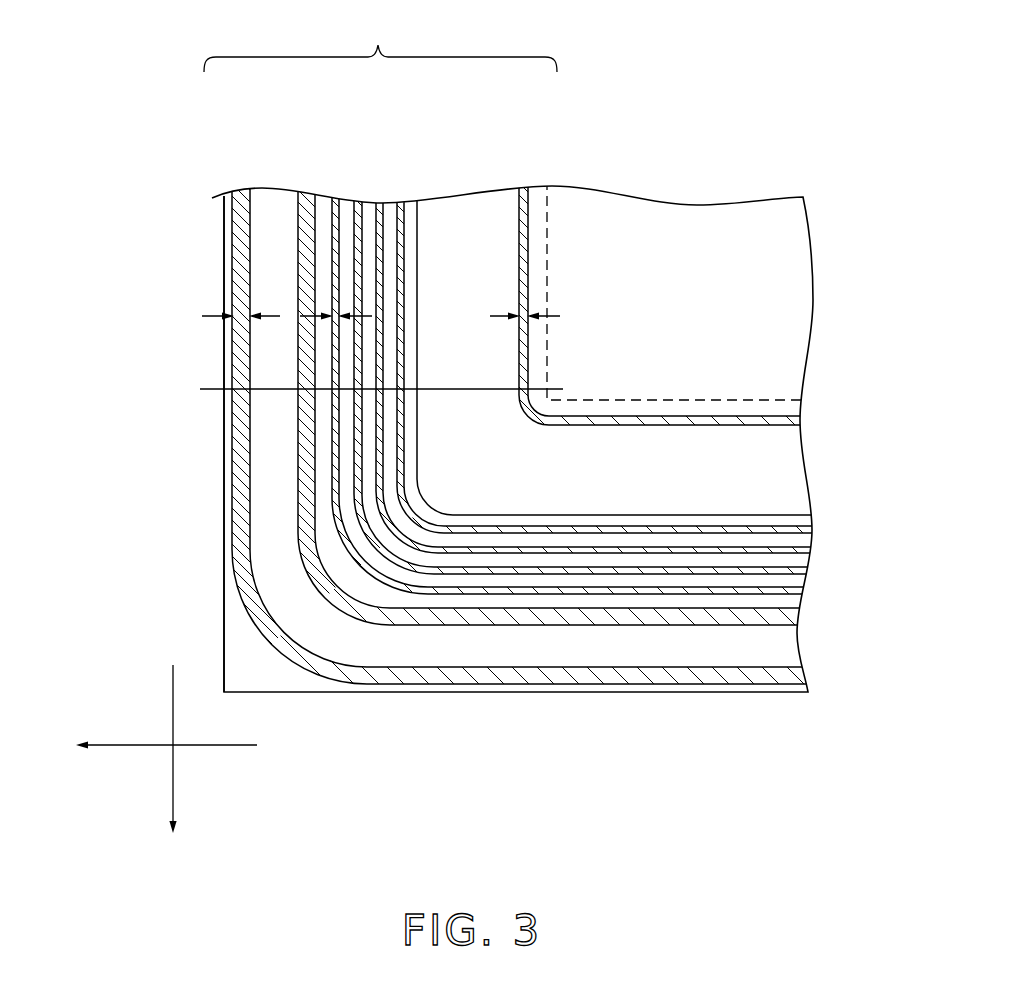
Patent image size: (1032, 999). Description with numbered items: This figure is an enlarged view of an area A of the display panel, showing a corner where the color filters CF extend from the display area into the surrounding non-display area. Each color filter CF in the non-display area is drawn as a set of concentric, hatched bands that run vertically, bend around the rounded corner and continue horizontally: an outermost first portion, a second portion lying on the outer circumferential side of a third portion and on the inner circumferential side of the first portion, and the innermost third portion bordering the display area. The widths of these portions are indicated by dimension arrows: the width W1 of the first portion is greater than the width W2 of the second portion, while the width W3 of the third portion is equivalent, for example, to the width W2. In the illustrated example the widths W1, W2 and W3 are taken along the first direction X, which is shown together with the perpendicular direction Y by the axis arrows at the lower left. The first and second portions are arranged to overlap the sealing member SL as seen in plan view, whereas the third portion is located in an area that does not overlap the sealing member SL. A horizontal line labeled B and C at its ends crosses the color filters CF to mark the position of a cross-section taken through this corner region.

The area A is at (702, 161).
The sealing member SL is at (221, 439).
The color filters CF is at (380, 44).
The width of the first portion W1 is at (237, 315).
The width of the second portion W2 is at (338, 316).
The width of the third portion W3 is at (530, 314).
The section line end B is at (372, 388).
The section line end C is at (578, 387).
The first direction X is at (156, 747).
The Y direction Y is at (173, 763).